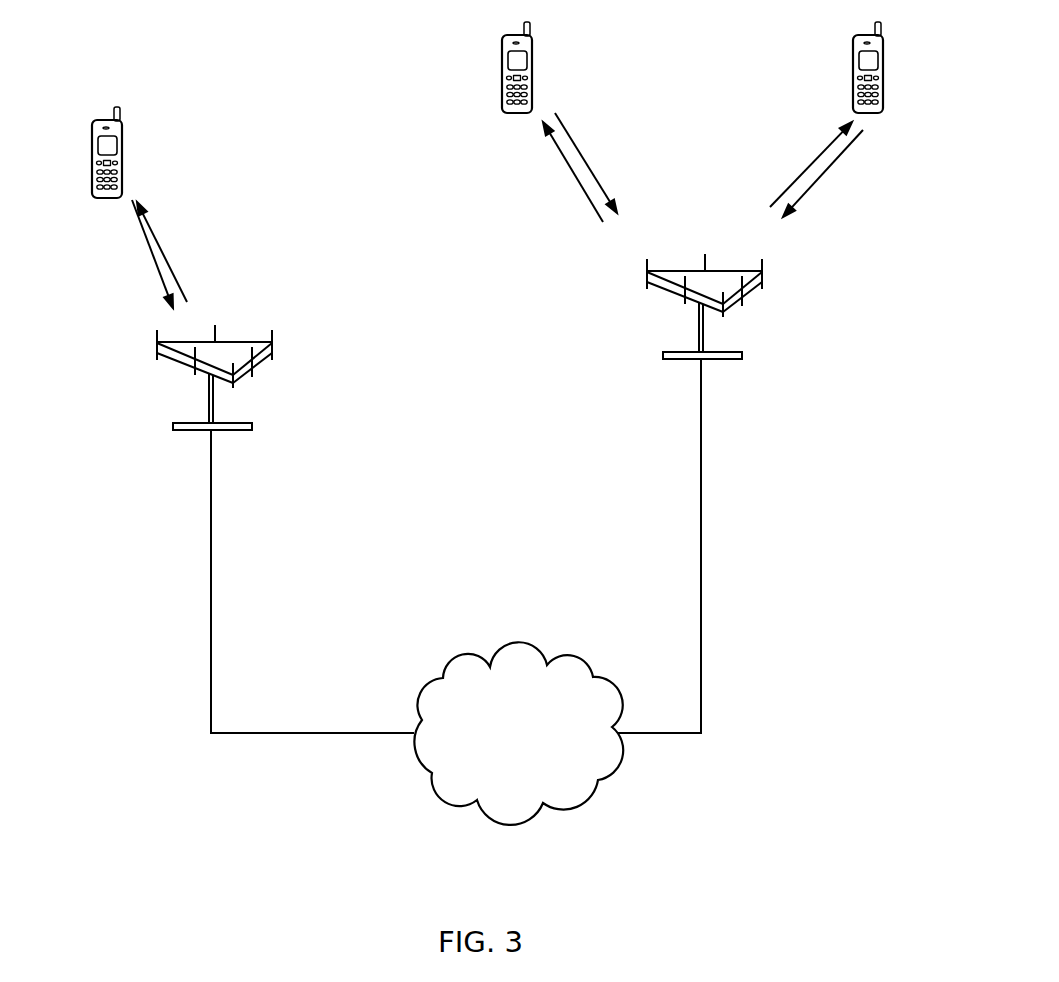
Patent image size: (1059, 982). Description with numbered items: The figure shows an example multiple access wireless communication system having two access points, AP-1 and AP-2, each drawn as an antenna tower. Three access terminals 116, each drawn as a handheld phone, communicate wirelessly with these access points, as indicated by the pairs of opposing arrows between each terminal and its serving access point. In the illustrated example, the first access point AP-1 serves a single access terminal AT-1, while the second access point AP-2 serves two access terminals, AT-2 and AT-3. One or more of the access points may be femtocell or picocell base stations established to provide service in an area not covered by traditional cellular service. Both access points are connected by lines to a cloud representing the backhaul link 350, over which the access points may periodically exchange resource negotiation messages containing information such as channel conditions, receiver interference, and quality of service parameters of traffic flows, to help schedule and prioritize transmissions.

The access terminal 116 is at (461, 117).
The backhaul link 350 is at (580, 797).
The access terminal AT-1 is at (81, 165).
The access terminal AT-2 is at (490, 78).
The access terminal AT-3 is at (841, 67).
The access point AP-1 is at (195, 377).
The access point AP-2 is at (714, 306).